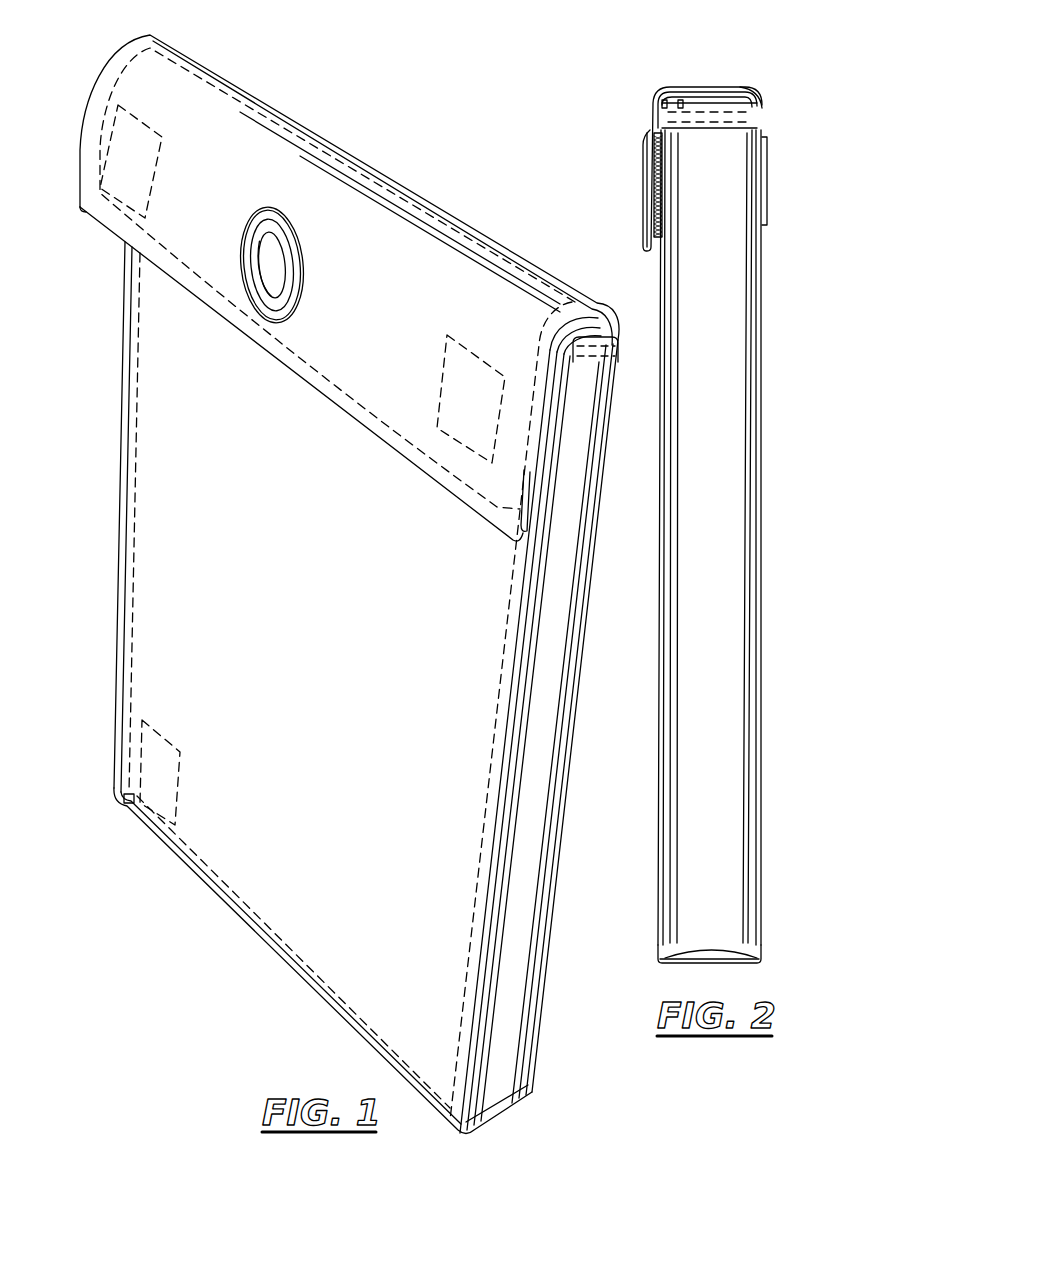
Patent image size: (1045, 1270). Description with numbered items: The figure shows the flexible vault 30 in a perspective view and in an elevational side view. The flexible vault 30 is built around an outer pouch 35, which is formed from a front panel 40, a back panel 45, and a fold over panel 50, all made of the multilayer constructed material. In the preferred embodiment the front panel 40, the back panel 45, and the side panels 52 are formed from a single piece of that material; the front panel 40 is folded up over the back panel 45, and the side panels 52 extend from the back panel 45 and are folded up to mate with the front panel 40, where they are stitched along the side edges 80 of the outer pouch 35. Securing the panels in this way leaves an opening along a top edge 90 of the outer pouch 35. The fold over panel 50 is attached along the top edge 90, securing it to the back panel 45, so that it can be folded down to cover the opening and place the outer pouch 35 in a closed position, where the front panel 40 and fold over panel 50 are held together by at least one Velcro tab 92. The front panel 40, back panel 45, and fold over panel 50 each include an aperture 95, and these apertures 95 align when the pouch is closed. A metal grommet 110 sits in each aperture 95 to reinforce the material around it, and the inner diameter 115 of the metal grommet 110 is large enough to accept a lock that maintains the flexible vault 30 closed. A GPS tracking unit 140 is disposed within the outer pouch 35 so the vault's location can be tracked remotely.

In FIG. 1, the flexible vault 30 is at (100, 66).
In FIG. 2, the flexible vault 30 is at (780, 88).
In FIG. 1, the outer pouch 35 is at (100, 455).
In FIG. 2, the outer pouch 35 is at (778, 544).
In FIG. 1, the front panel 40 is at (153, 617).
In FIG. 2, the front panel 40 is at (659, 642).
In FIG. 1, the back panel 45 is at (565, 785).
In FIG. 2, the back panel 45 is at (762, 668).
In FIG. 1, the fold over panel 50 is at (434, 257).
In FIG. 2, the fold over panel 50 is at (656, 112).
In FIG. 1, the side panels 52 is at (547, 685).
In FIG. 2, the side panels 52 is at (735, 386).
In FIG. 1, the side edges 80 is at (117, 716).
In FIG. 2, the side edges 80 is at (709, 531).
In FIG. 2, the top edge 90 is at (755, 97).
In FIG. 1, the Velcro tab 92 is at (120, 177).
In FIG. 2, the Velcro tab 92 is at (633, 349).
In FIG. 1, the aperture 95 is at (277, 263).
In FIG. 1, the metal grommet 110 is at (290, 250).
In FIG. 1, the inner diameter 115 is at (280, 242).
In FIG. 1, the GPS tracking unit 140 is at (137, 807).